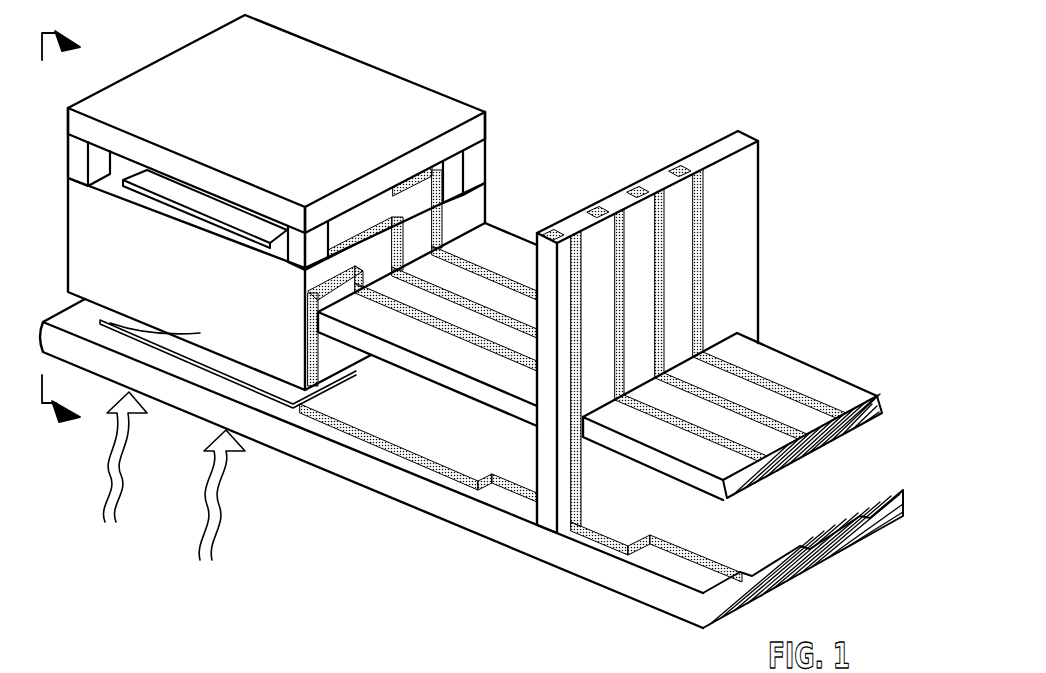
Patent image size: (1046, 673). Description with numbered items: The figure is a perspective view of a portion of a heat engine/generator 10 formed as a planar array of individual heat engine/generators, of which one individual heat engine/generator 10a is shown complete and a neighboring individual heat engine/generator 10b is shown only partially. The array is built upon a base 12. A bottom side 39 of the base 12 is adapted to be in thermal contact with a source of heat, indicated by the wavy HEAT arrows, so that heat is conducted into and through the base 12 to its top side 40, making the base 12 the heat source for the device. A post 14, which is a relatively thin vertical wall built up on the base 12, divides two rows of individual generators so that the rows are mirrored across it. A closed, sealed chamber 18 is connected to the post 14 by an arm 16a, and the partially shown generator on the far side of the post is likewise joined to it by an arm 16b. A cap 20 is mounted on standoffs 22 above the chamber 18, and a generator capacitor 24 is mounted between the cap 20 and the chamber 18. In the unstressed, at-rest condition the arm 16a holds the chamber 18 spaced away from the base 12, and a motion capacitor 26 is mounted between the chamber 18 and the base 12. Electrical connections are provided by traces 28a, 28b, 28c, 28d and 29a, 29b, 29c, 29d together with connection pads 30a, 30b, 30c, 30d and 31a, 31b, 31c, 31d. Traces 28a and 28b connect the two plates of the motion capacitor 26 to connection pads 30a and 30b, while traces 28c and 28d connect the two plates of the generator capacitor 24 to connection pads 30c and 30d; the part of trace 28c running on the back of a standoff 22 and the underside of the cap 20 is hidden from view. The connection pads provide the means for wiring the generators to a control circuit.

The heat engine/generator 10 is at (461, 336).
The individual heat engine/generator 10a is at (286, 344).
The individual heat engine/generator 10b is at (722, 357).
The base 12 is at (470, 518).
The post 14 is at (745, 132).
The arm 16a is at (508, 236).
The arm 16b is at (805, 358).
The closed chamber 18 is at (473, 203).
The cap 20 is at (470, 108).
The standoffs 22 is at (77, 155).
The generator capacitor 24 is at (200, 207).
The motion capacitor 26 is at (47, 327).
The trace 28a is at (352, 430).
The trace 28b is at (400, 312).
The trace 28c is at (452, 300).
The trace 28d is at (518, 305).
The trace 29a is at (582, 545).
The trace 29b is at (750, 468).
The trace 29c is at (813, 436).
The trace 29d is at (832, 412).
The connection pad 30a is at (554, 230).
The connection pad 30b is at (597, 205).
The connection pad 30c is at (637, 186).
The connection pad 30d is at (678, 166).
The connection pad 31a is at (600, 282).
The connection pad 31b is at (640, 205).
The connection pad 31c is at (672, 178).
The connection pad 31d is at (712, 158).
The bottom side 39 is at (165, 430).
The top side 40 is at (72, 300).